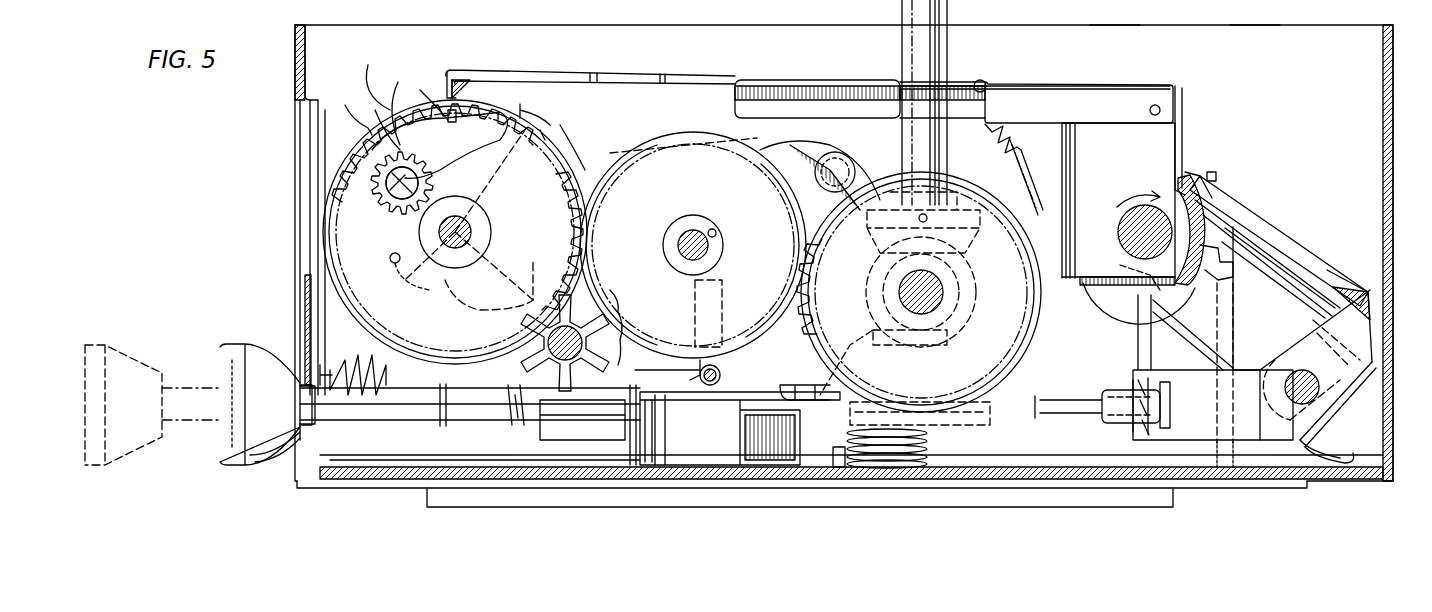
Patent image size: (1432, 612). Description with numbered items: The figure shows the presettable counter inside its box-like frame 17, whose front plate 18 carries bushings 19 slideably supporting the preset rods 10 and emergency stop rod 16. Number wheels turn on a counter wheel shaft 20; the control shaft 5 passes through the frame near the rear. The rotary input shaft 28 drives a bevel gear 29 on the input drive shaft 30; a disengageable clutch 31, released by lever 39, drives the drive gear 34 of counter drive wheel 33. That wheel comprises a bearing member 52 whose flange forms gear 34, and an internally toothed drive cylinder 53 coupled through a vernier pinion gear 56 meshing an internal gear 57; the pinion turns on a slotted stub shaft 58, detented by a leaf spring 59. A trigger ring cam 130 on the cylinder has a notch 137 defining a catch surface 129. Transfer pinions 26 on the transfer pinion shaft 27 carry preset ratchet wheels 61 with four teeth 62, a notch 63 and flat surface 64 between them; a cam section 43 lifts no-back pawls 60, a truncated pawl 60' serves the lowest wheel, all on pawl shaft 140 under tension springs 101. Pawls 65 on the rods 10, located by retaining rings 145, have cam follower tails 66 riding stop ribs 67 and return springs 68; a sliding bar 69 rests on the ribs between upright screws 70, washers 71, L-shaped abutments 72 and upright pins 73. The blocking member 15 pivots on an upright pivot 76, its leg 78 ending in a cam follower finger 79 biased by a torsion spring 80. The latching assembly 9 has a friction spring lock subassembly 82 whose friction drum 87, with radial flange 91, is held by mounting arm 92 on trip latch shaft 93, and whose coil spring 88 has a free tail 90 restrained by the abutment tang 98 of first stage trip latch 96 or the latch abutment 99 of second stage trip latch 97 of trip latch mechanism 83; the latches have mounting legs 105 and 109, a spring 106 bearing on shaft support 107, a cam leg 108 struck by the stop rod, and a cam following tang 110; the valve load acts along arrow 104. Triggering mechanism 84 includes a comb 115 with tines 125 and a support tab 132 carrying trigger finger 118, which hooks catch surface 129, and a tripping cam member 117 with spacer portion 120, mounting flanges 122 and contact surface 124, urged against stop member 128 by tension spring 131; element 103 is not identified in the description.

The rotary control shaft 5 is at (1118, 232).
The latching assembly 9 is at (1246, 56).
The preset rods 10 is at (195, 430).
The blocking member 15 is at (1065, 400).
The emergency stop rod 16 is at (1115, 398).
The frame 17 is at (1405, 217).
The front plate 18 is at (300, 272).
The bushings 19 is at (300, 398).
The counter wheel shaft 20 is at (470, 215).
The transfer pinion 26 is at (640, 332).
The transfer pinion shaft 27 is at (580, 343).
The rotary input shaft 28 is at (902, 8).
The bevel gear 29 is at (968, 278).
The input drive shaft 30 is at (910, 290).
The clutch 31 is at (1070, 325).
The counter drive wheel 33 is at (353, 108).
The drive gear 34 is at (520, 135).
The lever 39 is at (790, 390).
The camming section 43 is at (581, 231).
The bearing member 52 is at (462, 225).
The drive cylinder 53 is at (382, 117).
The vernier pinion gear 56 is at (445, 145).
The internal gear 57 is at (398, 95).
The stub shaft 58 is at (400, 200).
The leaf spring 59 is at (392, 260).
The no-back pawls 60 is at (535, 108).
The truncated no-back pawl 60' is at (576, 140).
The preset ratchet wheel 61 is at (615, 280).
The teeth 62 is at (360, 135).
The notch 63 is at (420, 360).
The flat surface 64 is at (693, 245).
The pawls 65 is at (582, 418).
The cam follower tails 66 is at (578, 458).
The stop ribs 67 is at (535, 460).
The tension return springs 68 is at (508, 430).
The sliding bar 69 is at (648, 440).
The upright screws 70 is at (675, 400).
The washers 71 is at (720, 395).
The L shaped stop abutments 72 is at (660, 440).
The upright pins 73 is at (630, 440).
The upright pivot 76 is at (905, 395).
The leg 78 is at (1138, 342).
The cam follower finger 79 is at (1131, 269).
The torsion spring 80 is at (895, 470).
The friction spring lock subassembly 82 is at (1187, 321).
The trip latch mechanism 83 is at (1359, 221).
The triggering mechanism 84 is at (1083, 76).
The friction drum 87 is at (1178, 205).
The helical coil spring 88 is at (1205, 280).
The free end tail 90 is at (1249, 362).
The radial flange 91 is at (1180, 178).
The mounting arm 92 is at (1301, 298).
The trip latch shaft 93 is at (1320, 400).
The first stage knock off trip latch 96 is at (1328, 258).
The second stage knock off trip latch 97 is at (1320, 290).
The abutment tang 98 is at (1210, 170).
The latch abutment 99 is at (1235, 212).
The tension springs 101 is at (725, 282).
The collar 103 is at (440, 425).
The arrow 104 is at (1127, 183).
The mounting legs 105 is at (1372, 345).
The compression and torsion spring 106 is at (1123, 12).
The shaft support 107 is at (1257, 12).
The cam leg 108 is at (1213, 405).
The mounting legs 109 is at (1360, 395).
The cam following tang 110 is at (1218, 176).
The comb 115 is at (690, 80).
The tripping cam member 117 is at (1128, 223).
The trigger finger 118 is at (540, 78).
The spacer portion 120 is at (1062, 146).
The mounting flanges 122 is at (1185, 102).
The contact surface 124 is at (1262, 228).
The tines 125 is at (472, 92).
The stop member 128 is at (1248, 363).
The catch surface 129 is at (429, 92).
The trigger ring cam 130 is at (355, 160).
The tension spring 131 is at (1014, 152).
The support tab 132 is at (622, 82).
The notch 137 is at (370, 74).
The pawl shaft 140 is at (830, 160).
The retaining rings 145 is at (855, 152).